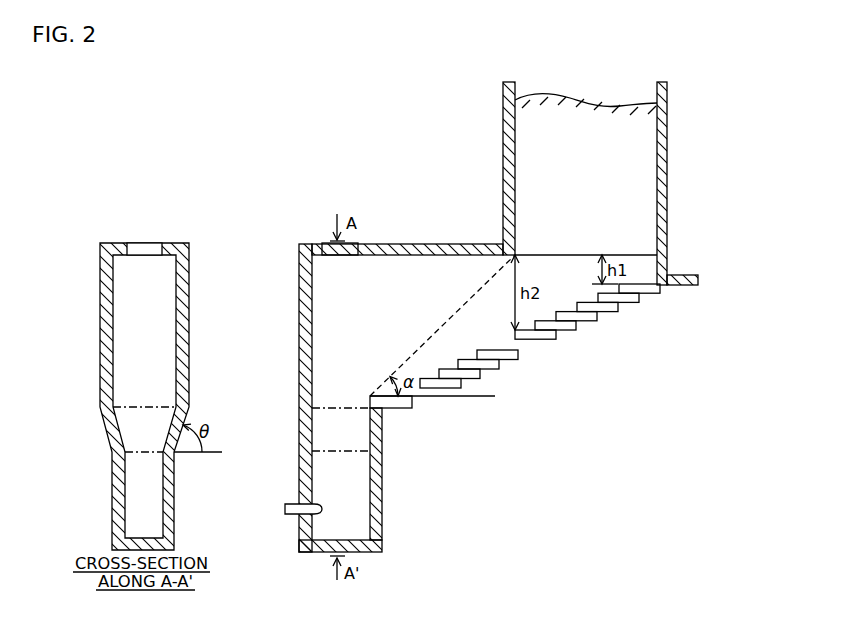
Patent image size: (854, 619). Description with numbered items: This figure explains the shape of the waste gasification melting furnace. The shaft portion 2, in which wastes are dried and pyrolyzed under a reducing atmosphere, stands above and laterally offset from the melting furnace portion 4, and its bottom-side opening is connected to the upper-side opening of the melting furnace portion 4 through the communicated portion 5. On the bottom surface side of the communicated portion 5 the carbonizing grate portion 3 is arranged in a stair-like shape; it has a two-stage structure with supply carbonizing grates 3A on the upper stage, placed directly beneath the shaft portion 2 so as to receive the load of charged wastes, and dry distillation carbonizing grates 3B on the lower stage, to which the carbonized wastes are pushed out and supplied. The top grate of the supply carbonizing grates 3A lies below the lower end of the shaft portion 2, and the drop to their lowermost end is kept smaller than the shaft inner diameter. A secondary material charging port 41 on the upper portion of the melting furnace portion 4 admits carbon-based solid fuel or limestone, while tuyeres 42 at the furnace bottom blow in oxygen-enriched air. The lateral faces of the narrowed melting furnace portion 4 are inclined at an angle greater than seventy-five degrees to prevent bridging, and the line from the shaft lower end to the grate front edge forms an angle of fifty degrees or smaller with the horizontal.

The shaft portion 2 is at (660, 183).
The carbonizing grate portion 3 is at (540, 368).
The supply carbonizing grates 3A is at (587, 340).
The dry distillation carbonizing grates 3B is at (498, 378).
The melting furnace portion 4 is at (172, 478).
The communicated portion 5 is at (423, 243).
The secondary material charging port 41 is at (143, 243).
The tuyeres 42 is at (292, 512).